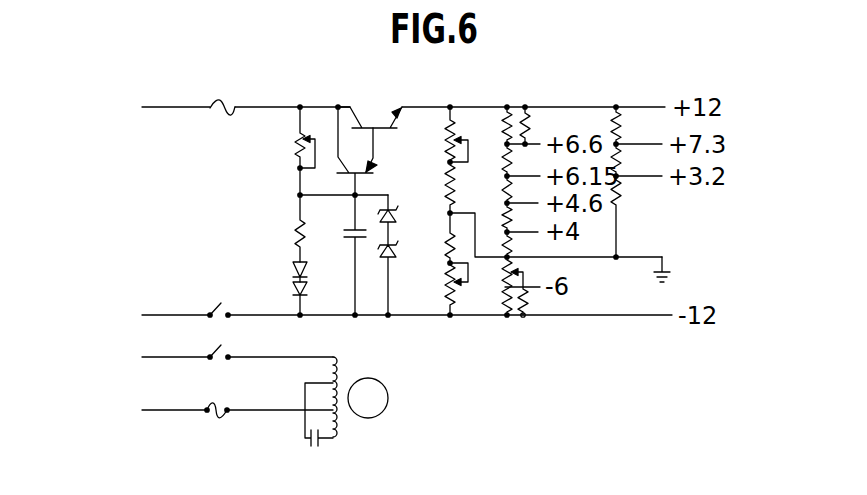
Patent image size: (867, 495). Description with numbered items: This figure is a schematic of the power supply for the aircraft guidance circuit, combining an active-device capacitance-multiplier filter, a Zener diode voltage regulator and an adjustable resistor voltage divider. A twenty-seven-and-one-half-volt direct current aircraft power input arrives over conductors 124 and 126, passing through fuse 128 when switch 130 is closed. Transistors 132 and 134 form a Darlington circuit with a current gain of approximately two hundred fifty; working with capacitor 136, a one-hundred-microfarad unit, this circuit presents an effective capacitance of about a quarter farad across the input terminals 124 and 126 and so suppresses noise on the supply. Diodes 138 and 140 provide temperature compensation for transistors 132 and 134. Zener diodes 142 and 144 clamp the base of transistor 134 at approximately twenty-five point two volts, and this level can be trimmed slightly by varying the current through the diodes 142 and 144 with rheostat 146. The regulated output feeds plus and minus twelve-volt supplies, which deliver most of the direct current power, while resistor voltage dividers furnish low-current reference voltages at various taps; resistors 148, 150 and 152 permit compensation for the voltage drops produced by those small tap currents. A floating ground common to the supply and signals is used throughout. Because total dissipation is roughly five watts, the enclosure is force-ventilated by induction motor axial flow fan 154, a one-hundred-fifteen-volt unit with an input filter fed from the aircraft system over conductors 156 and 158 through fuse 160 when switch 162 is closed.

The conductor 124 is at (160, 108).
The conductor 126 is at (165, 314).
The fuse 128 is at (221, 101).
The switch 130 is at (217, 306).
The transistor 132 is at (365, 126).
The transistor 134 is at (365, 176).
The capacitor 136 is at (348, 228).
The diode 138 is at (295, 263).
The diode 140 is at (293, 292).
The Zener diode 142 is at (397, 213).
The Zener diode 144 is at (397, 252).
The rheostat 146 is at (297, 152).
The resistor 148 is at (446, 287).
The resistor 150 is at (448, 144).
The resistor 152 is at (504, 276).
The induction motor axial flow fan 154 is at (378, 415).
The conductor 156 is at (152, 358).
The conductor 158 is at (158, 411).
The fuse 160 is at (212, 404).
The switch 162 is at (220, 354).